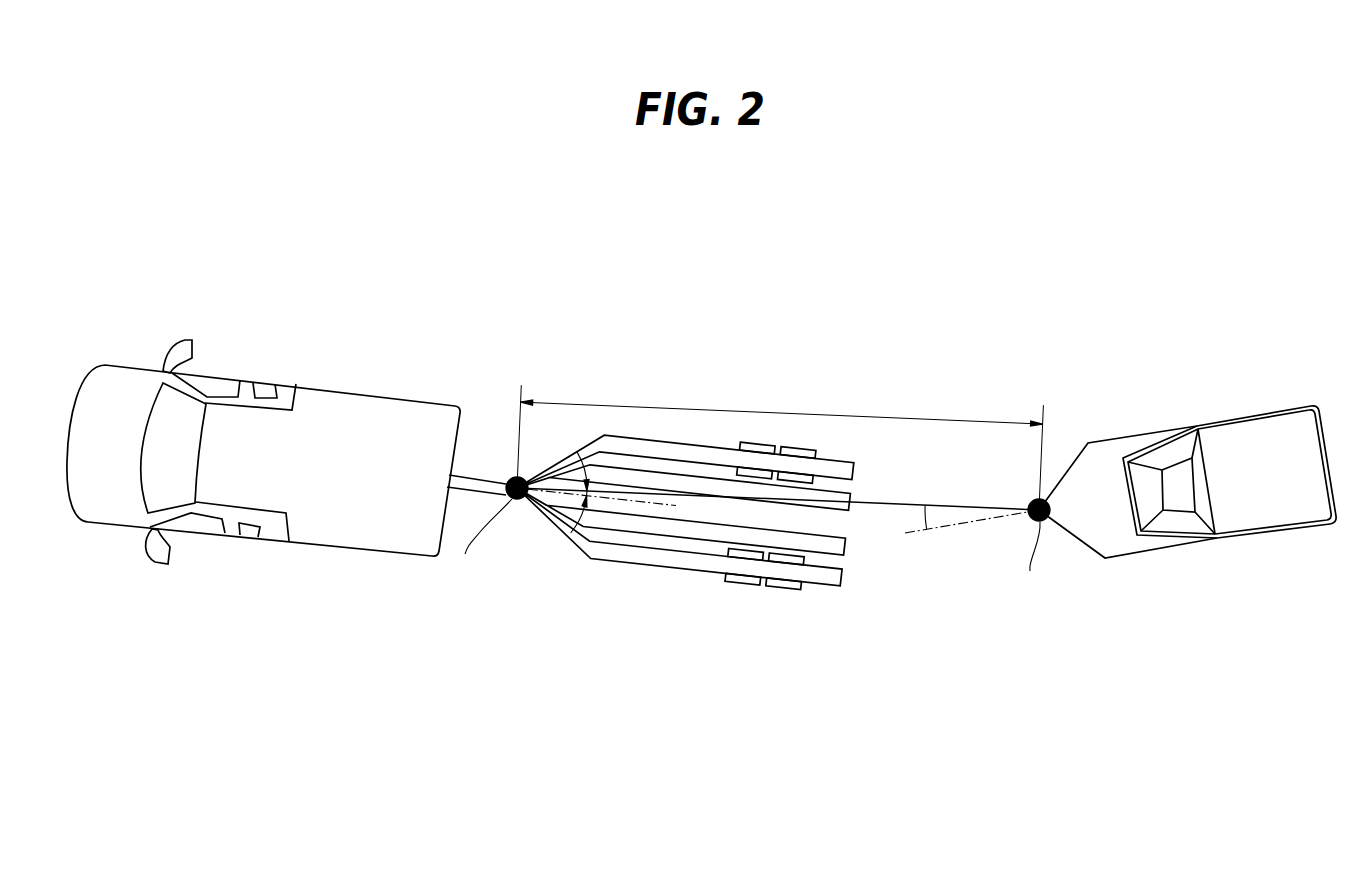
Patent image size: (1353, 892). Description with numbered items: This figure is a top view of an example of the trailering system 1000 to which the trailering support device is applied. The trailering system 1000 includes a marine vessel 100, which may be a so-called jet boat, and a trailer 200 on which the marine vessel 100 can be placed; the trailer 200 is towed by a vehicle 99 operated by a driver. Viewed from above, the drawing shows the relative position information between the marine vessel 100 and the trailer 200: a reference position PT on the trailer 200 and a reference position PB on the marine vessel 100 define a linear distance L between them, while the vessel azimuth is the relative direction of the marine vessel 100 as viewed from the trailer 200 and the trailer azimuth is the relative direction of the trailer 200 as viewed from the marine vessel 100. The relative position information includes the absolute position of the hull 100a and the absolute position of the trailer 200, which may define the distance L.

The trailering system 1000 is at (867, 212).
The vehicle 99 is at (228, 373).
The trailer 200 is at (623, 568).
The marine vessel 100 is at (1263, 406).
The hull 100a is at (1096, 440).